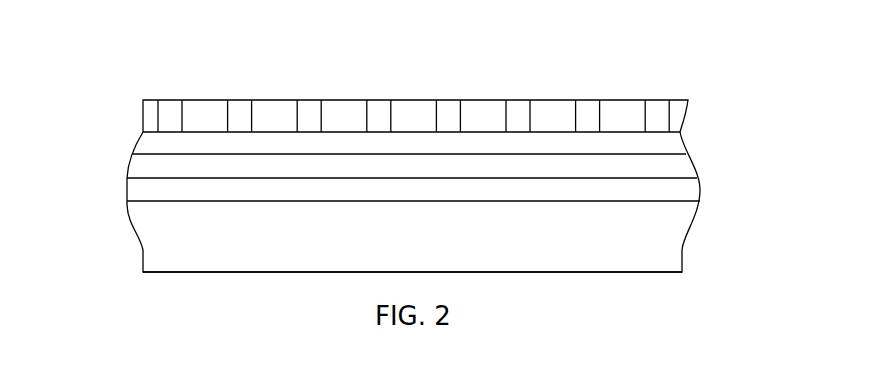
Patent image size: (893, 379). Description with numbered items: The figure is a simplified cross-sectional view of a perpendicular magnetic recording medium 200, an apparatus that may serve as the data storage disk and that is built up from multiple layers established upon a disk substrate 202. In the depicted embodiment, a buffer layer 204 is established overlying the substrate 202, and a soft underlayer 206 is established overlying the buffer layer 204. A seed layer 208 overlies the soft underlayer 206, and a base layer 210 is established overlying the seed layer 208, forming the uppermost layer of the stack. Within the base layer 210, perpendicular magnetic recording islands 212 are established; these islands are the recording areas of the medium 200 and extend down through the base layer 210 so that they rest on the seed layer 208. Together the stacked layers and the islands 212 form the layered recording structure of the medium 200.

The perpendicular magnetic recording medium 200 is at (111, 69).
The disk substrate 202 is at (136, 228).
The buffer layer 204 is at (700, 196).
The soft underlayer 206 is at (130, 168).
The seed layer 208 is at (682, 140).
The base layer 210 is at (143, 114).
The perpendicular magnetic recording islands 212 is at (587, 100).